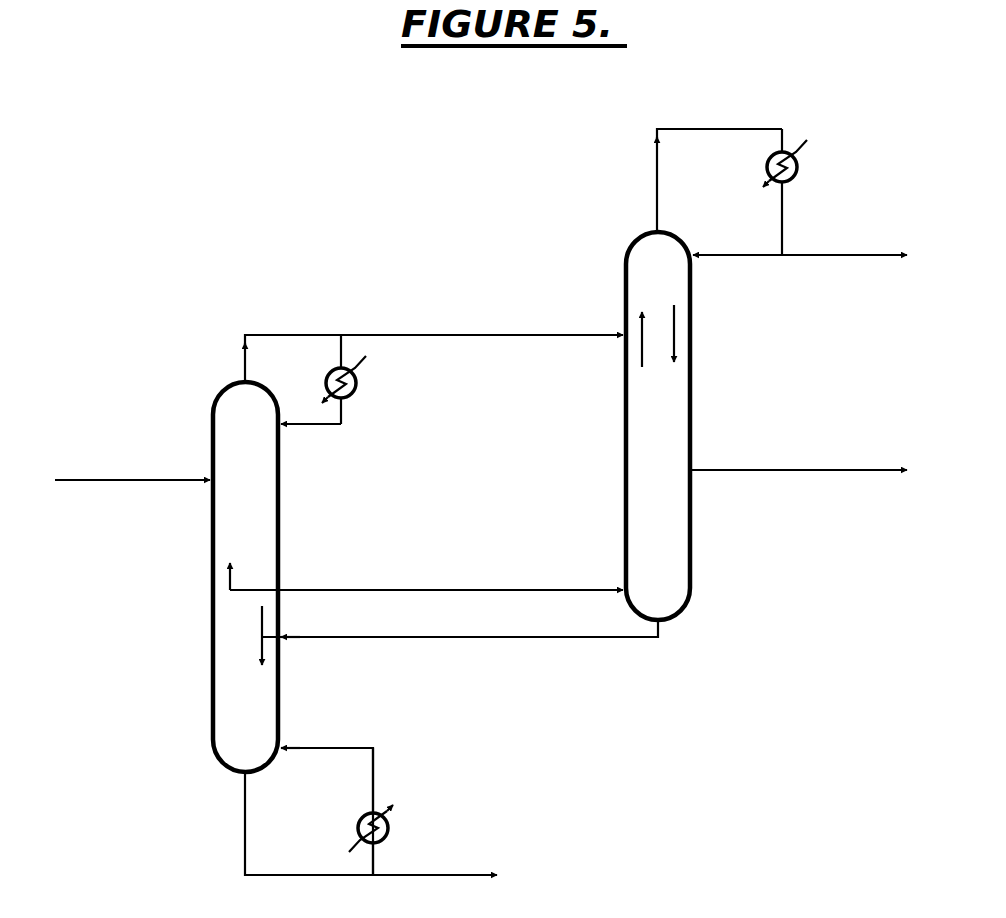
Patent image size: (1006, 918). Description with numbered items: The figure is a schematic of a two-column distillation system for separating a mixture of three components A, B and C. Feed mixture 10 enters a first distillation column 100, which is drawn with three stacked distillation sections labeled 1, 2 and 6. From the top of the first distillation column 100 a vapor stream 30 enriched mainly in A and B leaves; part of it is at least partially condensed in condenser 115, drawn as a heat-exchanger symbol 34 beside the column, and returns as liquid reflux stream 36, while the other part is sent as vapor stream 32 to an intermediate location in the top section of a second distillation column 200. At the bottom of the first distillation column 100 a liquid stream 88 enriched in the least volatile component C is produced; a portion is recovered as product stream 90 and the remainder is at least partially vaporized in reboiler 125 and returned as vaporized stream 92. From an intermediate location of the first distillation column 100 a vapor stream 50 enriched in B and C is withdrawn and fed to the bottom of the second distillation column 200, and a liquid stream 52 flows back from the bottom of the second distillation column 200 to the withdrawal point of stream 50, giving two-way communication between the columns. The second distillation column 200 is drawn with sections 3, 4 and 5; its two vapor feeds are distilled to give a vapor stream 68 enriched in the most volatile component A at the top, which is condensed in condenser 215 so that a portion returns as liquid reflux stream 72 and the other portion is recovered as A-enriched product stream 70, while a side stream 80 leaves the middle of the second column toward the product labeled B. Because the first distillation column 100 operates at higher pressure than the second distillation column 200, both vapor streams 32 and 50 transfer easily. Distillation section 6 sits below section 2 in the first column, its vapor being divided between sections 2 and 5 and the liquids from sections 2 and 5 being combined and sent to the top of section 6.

The first section of first column 1 is at (253, 455).
The distillation section 2 is at (253, 541).
The first section of second column 3 is at (666, 295).
The second section of second column 4 is at (666, 422).
The distillation section 5 is at (666, 525).
The distillation section 6 is at (253, 716).
The feed mixture 10 is at (105, 482).
The vapor stream 30 is at (243, 367).
The vapor stream 32 is at (488, 335).
The condenser 34 is at (338, 368).
The liquid reflux stream 36 is at (312, 425).
The vapor stream 50 is at (560, 590).
The liquid stream 52 is at (552, 640).
The vapor stream 68 is at (697, 128).
The A-enriched product stream 70 is at (838, 255).
The liquid reflux stream 72 is at (735, 257).
The product B line 80 is at (790, 470).
The liquid stream 88 is at (245, 822).
The product stream 90 is at (427, 875).
The vaporized stream 92 is at (333, 748).
The first distillation column 100 is at (297, 502).
The condenser 115 is at (357, 393).
The reboiler 125 is at (392, 822).
The second distillation column 200 is at (691, 410).
The condenser 215 is at (803, 152).